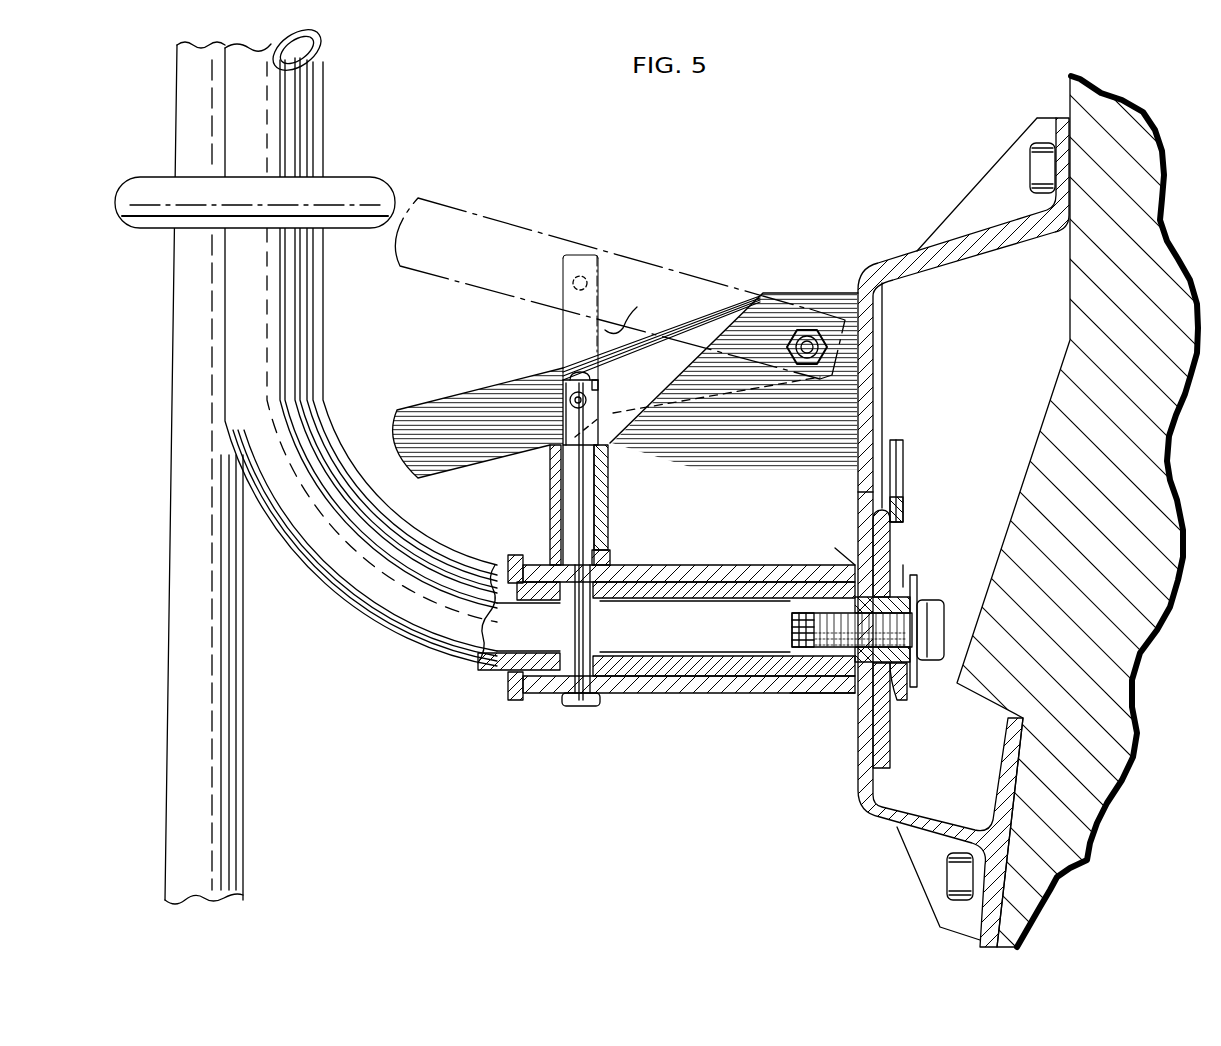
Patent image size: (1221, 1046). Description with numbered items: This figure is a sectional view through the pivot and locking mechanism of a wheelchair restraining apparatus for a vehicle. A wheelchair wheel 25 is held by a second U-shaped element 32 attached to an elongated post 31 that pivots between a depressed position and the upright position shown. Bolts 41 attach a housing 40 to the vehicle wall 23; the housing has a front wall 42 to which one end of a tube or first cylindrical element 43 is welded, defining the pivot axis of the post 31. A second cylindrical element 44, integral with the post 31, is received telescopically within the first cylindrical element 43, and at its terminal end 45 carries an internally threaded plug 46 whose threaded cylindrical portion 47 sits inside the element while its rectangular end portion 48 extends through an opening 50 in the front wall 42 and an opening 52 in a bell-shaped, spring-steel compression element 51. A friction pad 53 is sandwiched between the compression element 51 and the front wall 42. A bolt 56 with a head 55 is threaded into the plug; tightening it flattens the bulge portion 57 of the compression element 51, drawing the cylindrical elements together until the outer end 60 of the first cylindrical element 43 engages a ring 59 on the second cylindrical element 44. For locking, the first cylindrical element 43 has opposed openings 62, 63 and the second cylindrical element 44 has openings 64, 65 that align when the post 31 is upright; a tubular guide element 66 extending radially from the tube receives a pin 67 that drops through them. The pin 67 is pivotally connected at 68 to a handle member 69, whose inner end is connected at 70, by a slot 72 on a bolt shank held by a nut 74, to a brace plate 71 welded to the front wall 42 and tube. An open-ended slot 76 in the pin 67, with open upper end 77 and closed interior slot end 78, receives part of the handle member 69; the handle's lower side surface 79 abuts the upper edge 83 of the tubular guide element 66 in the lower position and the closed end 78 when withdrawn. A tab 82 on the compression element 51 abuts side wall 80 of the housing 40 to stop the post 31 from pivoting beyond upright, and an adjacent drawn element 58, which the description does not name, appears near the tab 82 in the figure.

The wall 23 is at (1068, 100).
The wheelchair wheel 25 is at (187, 132).
The post 31 is at (300, 272).
The second U-shaped element 32 is at (355, 184).
The housing 40 is at (898, 250).
The bolts 41 is at (1035, 166).
The front wall 42 is at (858, 406).
The first cylindrical element 43 is at (650, 562).
The second cylindrical element 44 is at (618, 606).
The terminal end 45 is at (840, 555).
The plug 46 is at (783, 630).
The threaded cylindrical portion 47 is at (812, 697).
The end portion 48 is at (912, 606).
The opening 50 is at (897, 715).
The compression element 51 is at (905, 548).
The opening 52 is at (918, 665).
The friction pad 53 is at (870, 493).
The bolt head 55 is at (945, 626).
The bolt 56 is at (797, 633).
The bulge portion 57 is at (905, 695).
The stop 58 is at (905, 505).
The ring 59 is at (510, 550).
The outer end 60 is at (508, 690).
The opening 62 is at (600, 555).
The opening 63 is at (588, 692).
The opening 64 is at (540, 605).
The opening 65 is at (568, 700).
The tubular guide element 66 is at (610, 480).
The pin 67 is at (577, 487).
The pivotal connection 68 is at (598, 383).
The handle member 69 is at (422, 447).
The pivotal connection 70 is at (800, 335).
The brace plate 71 is at (706, 476).
The slot 72 is at (882, 323).
The nut 74 is at (790, 380).
The open-ended slot 76 is at (562, 403).
The open upper end 77 is at (577, 370).
The closed interior slot end 78 is at (578, 312).
The lower side surface 79 is at (420, 495).
The side wall 80 is at (981, 325).
The tab 82 is at (905, 455).
The upper edge 83 is at (560, 443).